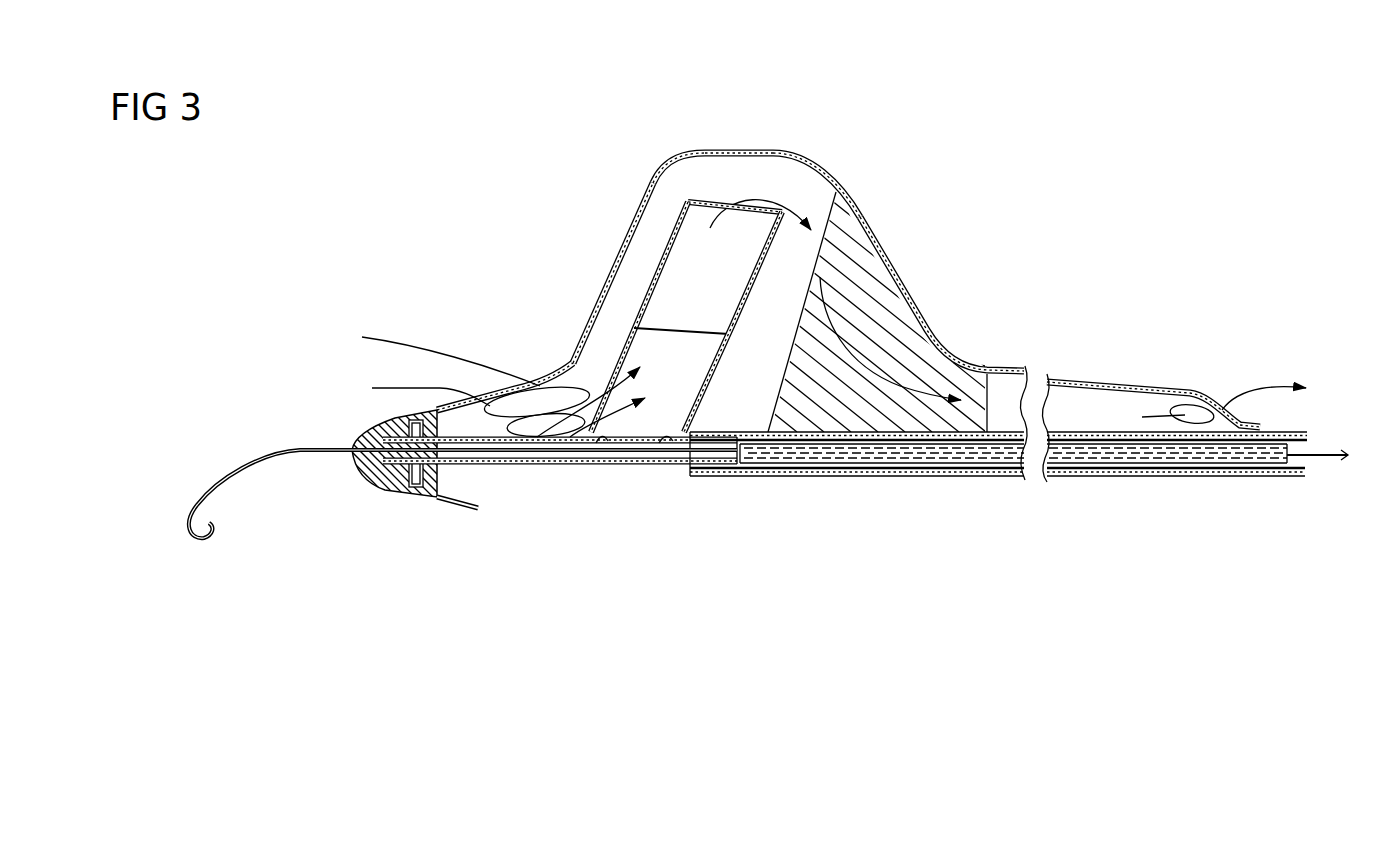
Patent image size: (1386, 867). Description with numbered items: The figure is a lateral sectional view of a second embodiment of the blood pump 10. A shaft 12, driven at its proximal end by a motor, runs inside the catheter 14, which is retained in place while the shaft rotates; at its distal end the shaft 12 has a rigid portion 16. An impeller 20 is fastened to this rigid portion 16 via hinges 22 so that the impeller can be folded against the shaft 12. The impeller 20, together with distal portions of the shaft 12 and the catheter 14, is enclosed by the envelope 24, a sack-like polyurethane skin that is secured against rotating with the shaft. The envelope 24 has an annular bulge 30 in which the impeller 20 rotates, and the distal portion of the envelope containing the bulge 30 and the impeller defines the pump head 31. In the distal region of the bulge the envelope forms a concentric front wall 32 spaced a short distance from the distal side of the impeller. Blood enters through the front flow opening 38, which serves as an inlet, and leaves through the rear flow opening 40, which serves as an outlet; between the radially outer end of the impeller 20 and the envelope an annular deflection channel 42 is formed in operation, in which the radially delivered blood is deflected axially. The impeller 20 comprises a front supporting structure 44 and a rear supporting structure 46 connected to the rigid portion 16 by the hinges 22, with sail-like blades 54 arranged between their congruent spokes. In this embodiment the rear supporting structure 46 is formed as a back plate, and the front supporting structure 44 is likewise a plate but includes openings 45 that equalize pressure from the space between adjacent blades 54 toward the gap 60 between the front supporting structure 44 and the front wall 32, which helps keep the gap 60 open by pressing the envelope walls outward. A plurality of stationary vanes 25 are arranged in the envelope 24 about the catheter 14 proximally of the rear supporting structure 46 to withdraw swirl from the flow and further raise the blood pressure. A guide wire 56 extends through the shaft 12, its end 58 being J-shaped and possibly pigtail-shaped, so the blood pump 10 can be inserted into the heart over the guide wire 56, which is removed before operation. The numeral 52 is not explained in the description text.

The blood pump 10 is at (562, 196).
The shaft 12 is at (893, 466).
The catheter 14 is at (1202, 480).
The rigid portion 16 is at (520, 467).
The impeller 20 is at (773, 266).
The hinges 22 is at (601, 444).
The envelope 24 is at (1003, 368).
The stationary vanes 25 is at (913, 323).
The annular bulge 30 is at (834, 168).
The pump head 31 is at (655, 168).
The front wall 32 is at (638, 232).
The front flow opening 38 is at (540, 402).
The rear flow opening 40 is at (1186, 410).
The annular deflection channel 42 is at (718, 175).
The front supporting structure 44 is at (642, 313).
The openings 45 is at (652, 287).
The rear supporting structure 46 is at (720, 360).
The partition 52 is at (631, 338).
The blades 54 is at (724, 304).
The guide wire 56 is at (310, 431).
The end 58 is at (179, 543).
The gap 60 is at (651, 203).